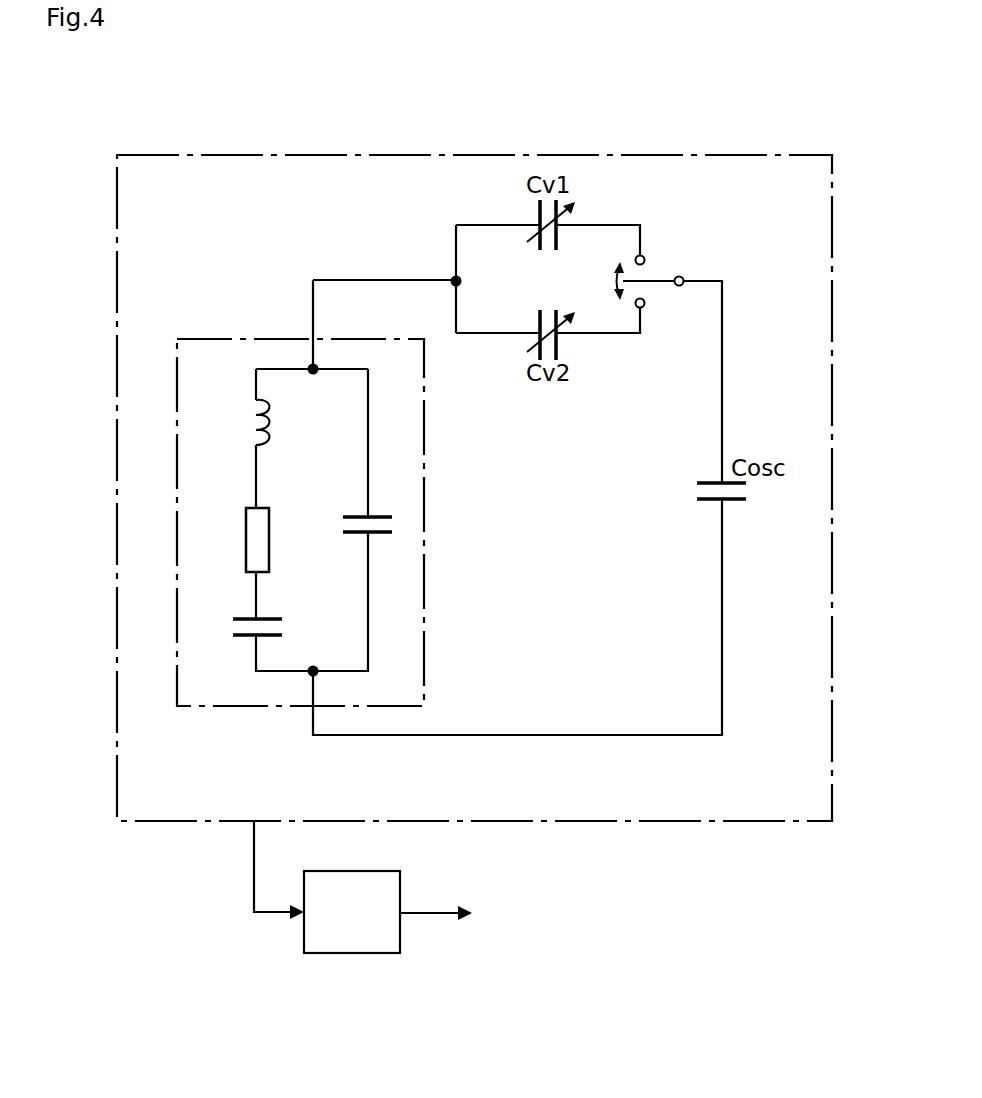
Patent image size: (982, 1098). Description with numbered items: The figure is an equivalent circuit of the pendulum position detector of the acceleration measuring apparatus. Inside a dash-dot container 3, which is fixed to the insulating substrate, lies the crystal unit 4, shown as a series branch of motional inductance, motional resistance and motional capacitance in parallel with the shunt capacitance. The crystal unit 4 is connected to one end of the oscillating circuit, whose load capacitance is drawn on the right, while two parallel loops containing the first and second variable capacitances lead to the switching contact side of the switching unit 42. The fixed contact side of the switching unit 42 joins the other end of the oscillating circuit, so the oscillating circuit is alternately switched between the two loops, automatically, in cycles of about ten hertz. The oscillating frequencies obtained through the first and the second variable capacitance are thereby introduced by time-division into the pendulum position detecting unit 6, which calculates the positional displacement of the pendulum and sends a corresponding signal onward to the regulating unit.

The container 3 is at (732, 821).
The crystal unit 4 is at (252, 708).
The pendulum position detecting unit 6 is at (349, 953).
The switching unit 42 is at (666, 260).